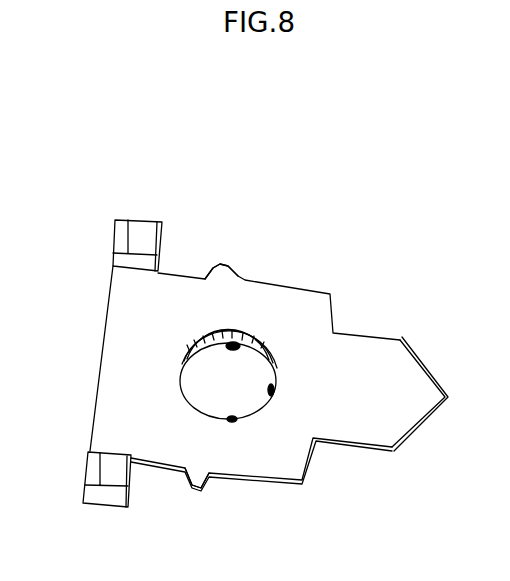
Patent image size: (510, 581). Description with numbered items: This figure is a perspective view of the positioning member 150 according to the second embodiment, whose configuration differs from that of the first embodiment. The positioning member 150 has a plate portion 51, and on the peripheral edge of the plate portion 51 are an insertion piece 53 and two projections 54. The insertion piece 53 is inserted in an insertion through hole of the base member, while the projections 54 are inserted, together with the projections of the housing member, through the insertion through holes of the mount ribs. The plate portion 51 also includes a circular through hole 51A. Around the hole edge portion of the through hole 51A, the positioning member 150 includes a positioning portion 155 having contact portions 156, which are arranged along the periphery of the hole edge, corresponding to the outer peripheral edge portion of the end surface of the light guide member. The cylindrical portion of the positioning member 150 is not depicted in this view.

The positioning member 150 is at (83, 420).
The plate portion 51 is at (130, 290).
The circular through hole 51A is at (192, 396).
The insertion piece 53 is at (393, 415).
The projections 54 is at (228, 272).
The positioning portion 155 is at (190, 355).
The contact portions 156 is at (231, 416).